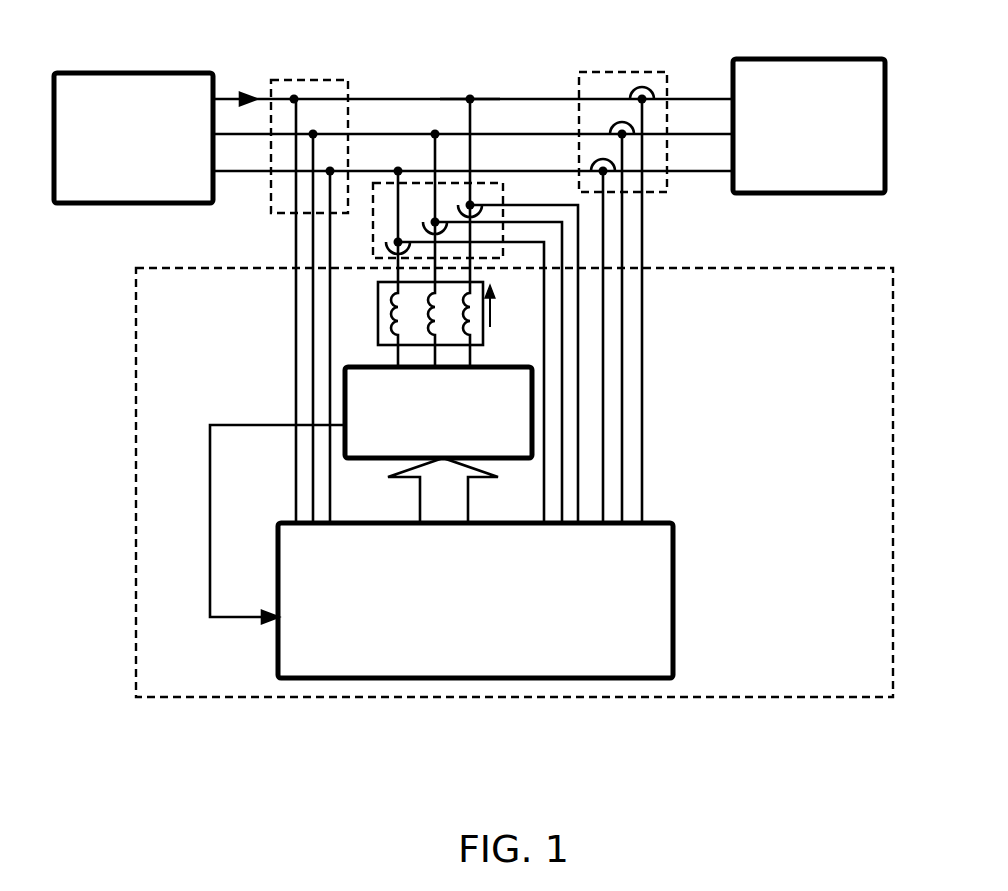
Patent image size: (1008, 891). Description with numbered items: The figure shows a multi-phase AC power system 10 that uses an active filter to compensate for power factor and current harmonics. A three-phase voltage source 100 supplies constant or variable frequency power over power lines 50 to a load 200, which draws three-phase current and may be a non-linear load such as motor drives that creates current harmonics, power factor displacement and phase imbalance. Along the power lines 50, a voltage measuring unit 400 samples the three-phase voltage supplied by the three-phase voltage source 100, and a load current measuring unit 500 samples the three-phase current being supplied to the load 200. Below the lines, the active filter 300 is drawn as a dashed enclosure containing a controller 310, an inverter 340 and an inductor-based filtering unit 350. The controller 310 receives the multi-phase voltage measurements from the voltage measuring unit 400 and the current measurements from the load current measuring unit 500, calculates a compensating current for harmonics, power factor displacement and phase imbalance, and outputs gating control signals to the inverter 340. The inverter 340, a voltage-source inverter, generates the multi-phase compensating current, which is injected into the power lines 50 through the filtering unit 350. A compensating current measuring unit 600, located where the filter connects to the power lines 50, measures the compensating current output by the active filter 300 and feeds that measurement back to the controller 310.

The power system 10 is at (412, 718).
The power lines 50 is at (487, 88).
The three-phase voltage source 100 is at (92, 203).
The load 200 is at (757, 193).
The active filter 300 is at (753, 697).
The controller 310 is at (673, 535).
The inverter 340 is at (335, 378).
The inductor-based filtering unit 350 is at (366, 302).
The voltage measuring unit 400 is at (325, 78).
The load current measuring unit 500 is at (650, 70).
The compensating current measuring unit 600 is at (362, 233).